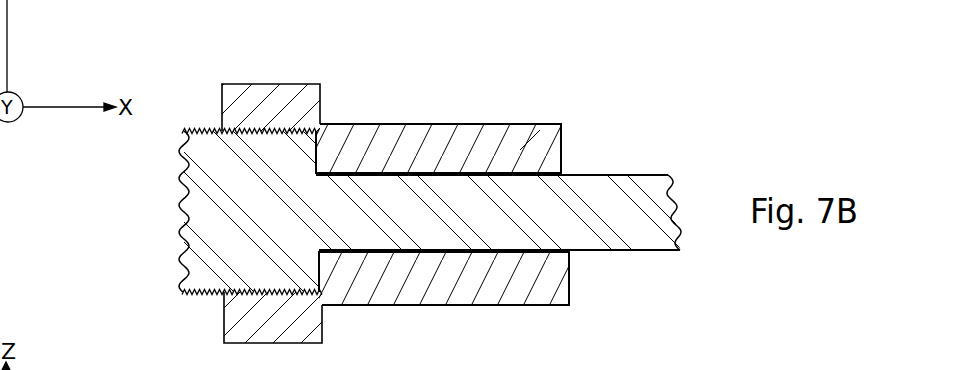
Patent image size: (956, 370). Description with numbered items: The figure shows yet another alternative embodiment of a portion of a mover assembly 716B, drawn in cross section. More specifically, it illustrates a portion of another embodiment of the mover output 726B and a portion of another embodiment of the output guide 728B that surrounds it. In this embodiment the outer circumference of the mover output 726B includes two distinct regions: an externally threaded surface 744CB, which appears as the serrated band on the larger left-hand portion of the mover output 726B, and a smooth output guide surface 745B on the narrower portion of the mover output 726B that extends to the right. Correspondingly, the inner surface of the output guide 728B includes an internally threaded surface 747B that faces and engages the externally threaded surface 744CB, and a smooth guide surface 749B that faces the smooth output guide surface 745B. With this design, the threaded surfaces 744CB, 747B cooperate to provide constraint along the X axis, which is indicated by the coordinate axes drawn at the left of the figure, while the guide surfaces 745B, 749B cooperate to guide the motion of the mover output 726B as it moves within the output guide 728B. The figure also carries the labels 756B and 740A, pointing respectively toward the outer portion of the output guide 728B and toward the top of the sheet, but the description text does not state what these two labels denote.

The mover output 726B is at (625, 192).
The externally threaded surface 744CB is at (210, 131).
The internally threaded surface 747B is at (232, 308).
The mover assembly 716B is at (391, 105).
The sleeve outer surface 756B is at (488, 104).
The output guide 728B is at (530, 142).
The smooth output guide surface 745B is at (543, 173).
The smooth guide surface 749B is at (420, 253).
The assembly 740A is at (446, 6).